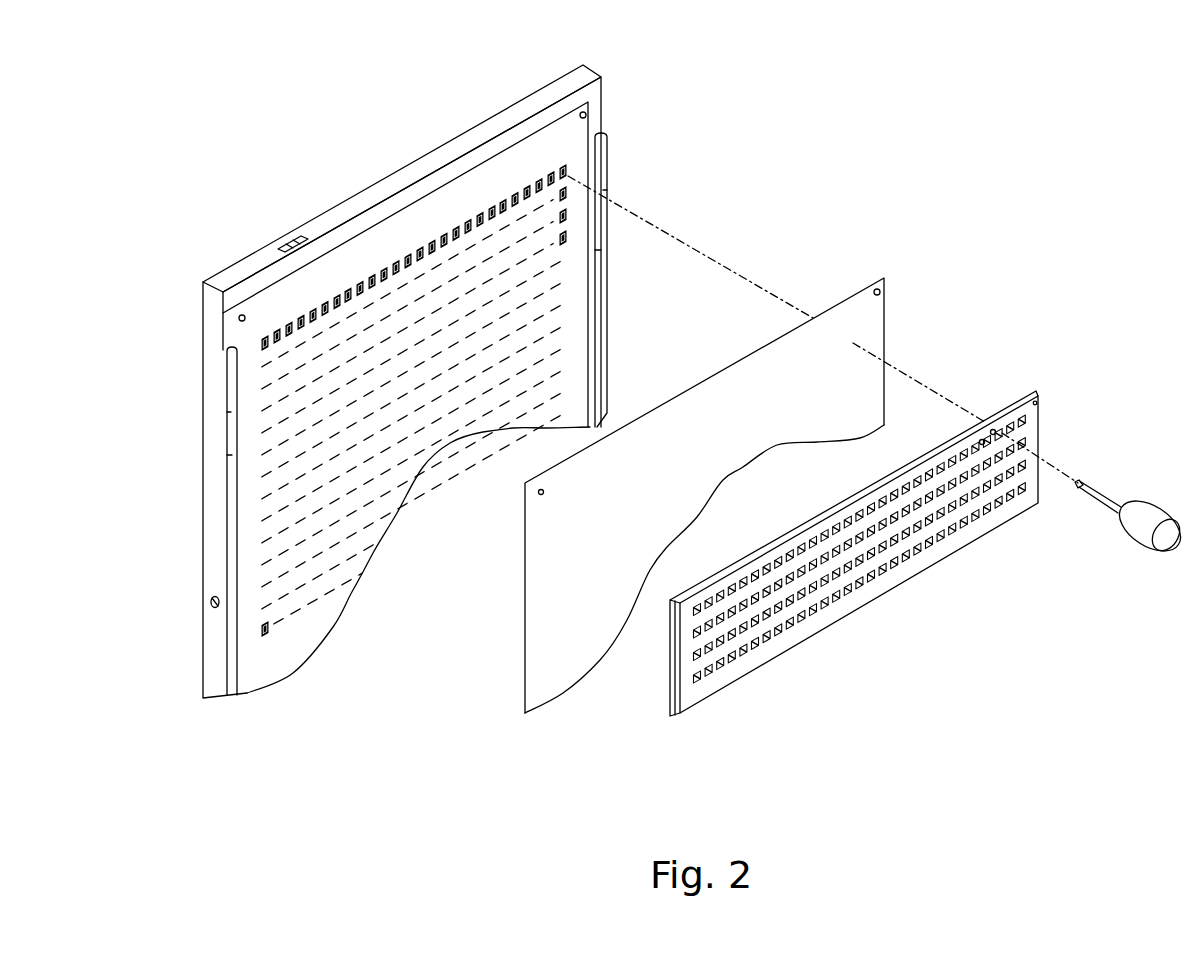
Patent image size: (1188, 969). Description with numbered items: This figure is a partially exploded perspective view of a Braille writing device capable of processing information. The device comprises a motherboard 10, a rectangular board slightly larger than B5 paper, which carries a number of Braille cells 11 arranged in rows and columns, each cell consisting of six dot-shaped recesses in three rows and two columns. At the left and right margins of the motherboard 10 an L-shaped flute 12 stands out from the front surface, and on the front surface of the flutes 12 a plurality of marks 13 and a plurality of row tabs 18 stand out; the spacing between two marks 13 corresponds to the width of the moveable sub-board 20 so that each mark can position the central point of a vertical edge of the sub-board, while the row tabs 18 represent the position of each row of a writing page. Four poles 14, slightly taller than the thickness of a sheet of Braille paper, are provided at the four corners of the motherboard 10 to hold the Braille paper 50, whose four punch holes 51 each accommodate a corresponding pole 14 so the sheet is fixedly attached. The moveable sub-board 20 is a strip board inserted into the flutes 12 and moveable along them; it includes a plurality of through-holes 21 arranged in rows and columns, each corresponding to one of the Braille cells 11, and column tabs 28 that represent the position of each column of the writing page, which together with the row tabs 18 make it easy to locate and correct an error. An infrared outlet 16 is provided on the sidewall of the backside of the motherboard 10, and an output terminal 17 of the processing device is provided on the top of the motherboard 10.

The motherboard 10 is at (417, 138).
The Braille cells 11 is at (563, 168).
The flute 12 is at (227, 350).
The marks 13 is at (230, 455).
The poles 14 is at (238, 318).
The infrared outlet 16 is at (206, 602).
The output terminal 17 is at (290, 237).
The row tabs 18 is at (230, 410).
The moveable sub-board 20 is at (909, 611).
The through-holes 21 is at (983, 441).
The column tabs 28 is at (994, 430).
The Braille paper 50 is at (515, 633).
The punch holes 51 is at (882, 292).